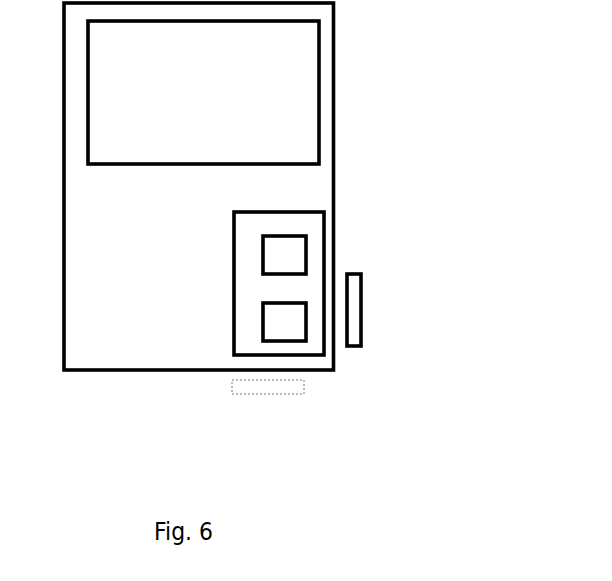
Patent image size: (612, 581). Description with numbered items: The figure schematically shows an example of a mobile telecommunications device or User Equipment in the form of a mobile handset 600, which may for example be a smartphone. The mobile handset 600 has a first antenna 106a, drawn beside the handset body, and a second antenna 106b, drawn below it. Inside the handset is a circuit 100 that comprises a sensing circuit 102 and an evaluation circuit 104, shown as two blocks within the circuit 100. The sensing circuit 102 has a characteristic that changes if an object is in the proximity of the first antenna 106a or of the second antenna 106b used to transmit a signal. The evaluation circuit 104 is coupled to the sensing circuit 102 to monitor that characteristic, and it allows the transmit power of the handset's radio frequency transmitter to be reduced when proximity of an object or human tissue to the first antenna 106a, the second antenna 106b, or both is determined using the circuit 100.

The mobile handset 600 is at (336, 44).
The circuit 100 is at (324, 227).
The sensing circuit 102 is at (262, 323).
The evaluation circuit 104 is at (262, 247).
The first antenna 106a is at (363, 299).
The second antenna 106b is at (285, 395).